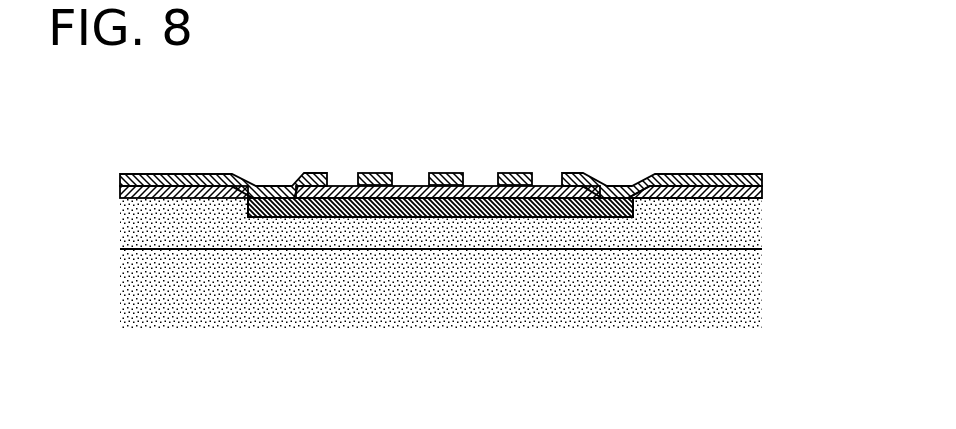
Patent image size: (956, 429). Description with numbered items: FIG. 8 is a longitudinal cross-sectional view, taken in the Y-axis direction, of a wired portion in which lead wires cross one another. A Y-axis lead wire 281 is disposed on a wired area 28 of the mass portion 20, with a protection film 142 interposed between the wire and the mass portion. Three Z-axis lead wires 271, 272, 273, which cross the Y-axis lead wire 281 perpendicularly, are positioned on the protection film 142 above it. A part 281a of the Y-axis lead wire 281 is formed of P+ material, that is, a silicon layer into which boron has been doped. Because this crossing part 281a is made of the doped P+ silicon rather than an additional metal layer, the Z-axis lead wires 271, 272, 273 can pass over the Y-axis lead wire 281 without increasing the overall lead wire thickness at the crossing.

The mass portion 20 is at (563, 280).
The wired area 28 is at (282, 238).
The protection film 142 is at (165, 192).
The Z-axis lead wire 271 is at (382, 173).
The Z-axis lead wire 272 is at (450, 173).
The Z-axis lead wire 273 is at (523, 173).
The Y-axis lead wire 281 is at (202, 172).
The part of Y-axis lead wire 281a is at (427, 218).